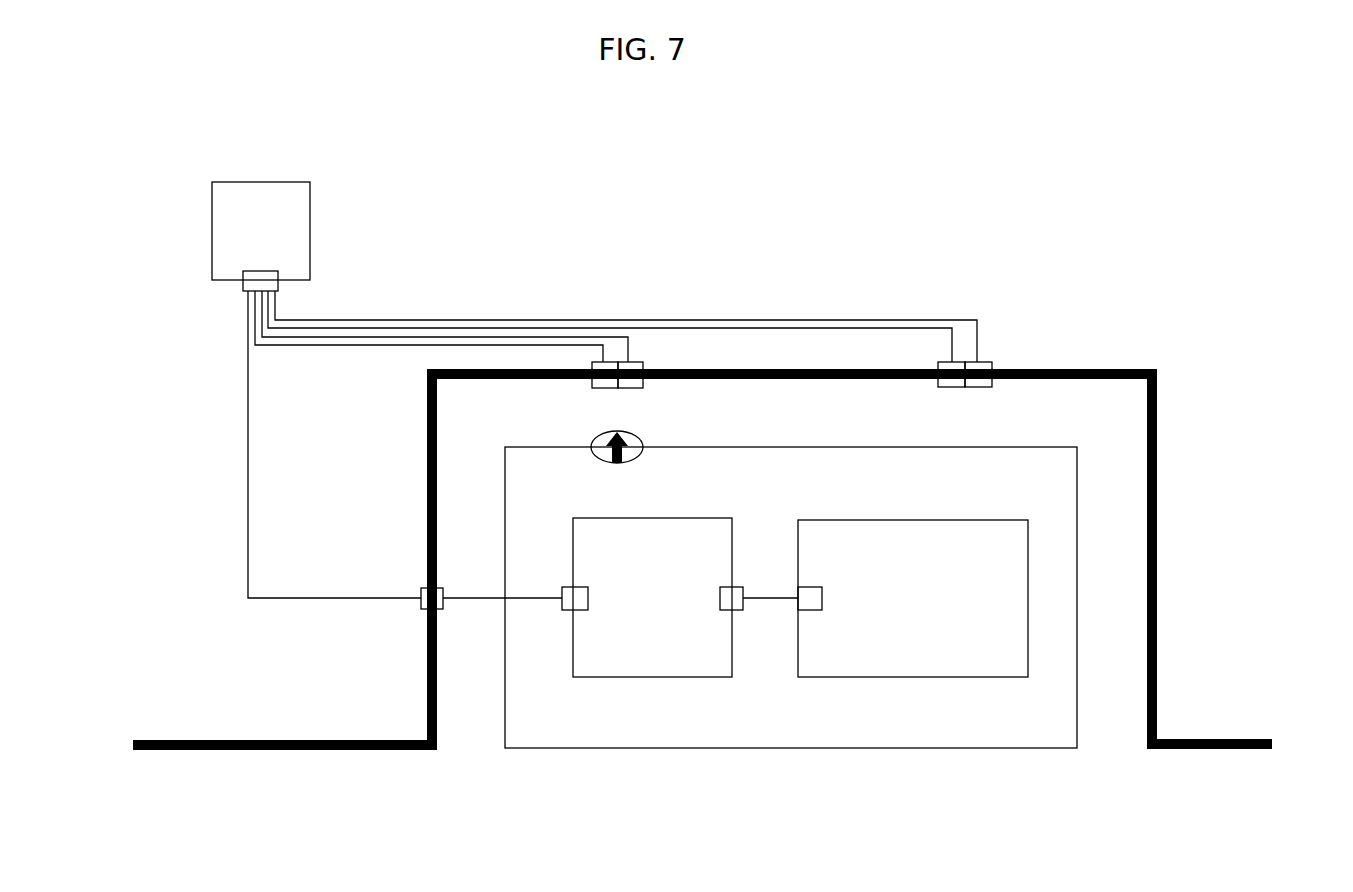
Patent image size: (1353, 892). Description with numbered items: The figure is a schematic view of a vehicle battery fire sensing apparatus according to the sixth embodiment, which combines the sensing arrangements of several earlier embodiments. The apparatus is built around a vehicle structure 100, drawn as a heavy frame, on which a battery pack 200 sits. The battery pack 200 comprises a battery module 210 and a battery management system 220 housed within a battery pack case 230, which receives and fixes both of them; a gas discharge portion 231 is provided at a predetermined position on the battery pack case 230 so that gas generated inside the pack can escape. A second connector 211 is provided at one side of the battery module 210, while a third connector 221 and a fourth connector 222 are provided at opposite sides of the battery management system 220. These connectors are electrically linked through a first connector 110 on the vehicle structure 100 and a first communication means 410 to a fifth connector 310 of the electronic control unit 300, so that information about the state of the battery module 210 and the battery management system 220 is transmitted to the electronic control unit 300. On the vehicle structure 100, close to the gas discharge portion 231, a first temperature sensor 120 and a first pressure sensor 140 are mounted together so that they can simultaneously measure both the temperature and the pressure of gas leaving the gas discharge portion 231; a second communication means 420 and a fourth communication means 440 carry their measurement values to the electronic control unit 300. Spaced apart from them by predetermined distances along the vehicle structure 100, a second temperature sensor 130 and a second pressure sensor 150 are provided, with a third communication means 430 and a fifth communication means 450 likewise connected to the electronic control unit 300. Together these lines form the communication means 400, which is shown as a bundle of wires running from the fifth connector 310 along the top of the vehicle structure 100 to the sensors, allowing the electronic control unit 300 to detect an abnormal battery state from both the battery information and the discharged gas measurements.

The vehicle structure 100 is at (287, 762).
The first connector 110 is at (423, 588).
The first temperature sensor 120 is at (590, 388).
The second temperature sensor 130 is at (938, 385).
The first pressure sensor 140 is at (643, 364).
The second pressure sensor 150 is at (992, 365).
The battery pack 200 is at (828, 765).
The battery module 210 is at (968, 520).
The second connector 211 is at (806, 584).
The battery management system 220 is at (585, 518).
The third connector 221 is at (736, 611).
The fourth connector 222 is at (571, 611).
The battery pack case 230 is at (630, 750).
The gas discharge portion 231 is at (643, 452).
The electronic control unit 300 is at (267, 182).
The fifth connector 310 is at (240, 281).
The communication means 400 is at (296, 302).
The first communication means 410 is at (246, 440).
The second communication means 420 is at (432, 330).
The third communication means 430 is at (532, 328).
The fourth communication means 440 is at (483, 337).
The fifth communication means 450 is at (582, 320).